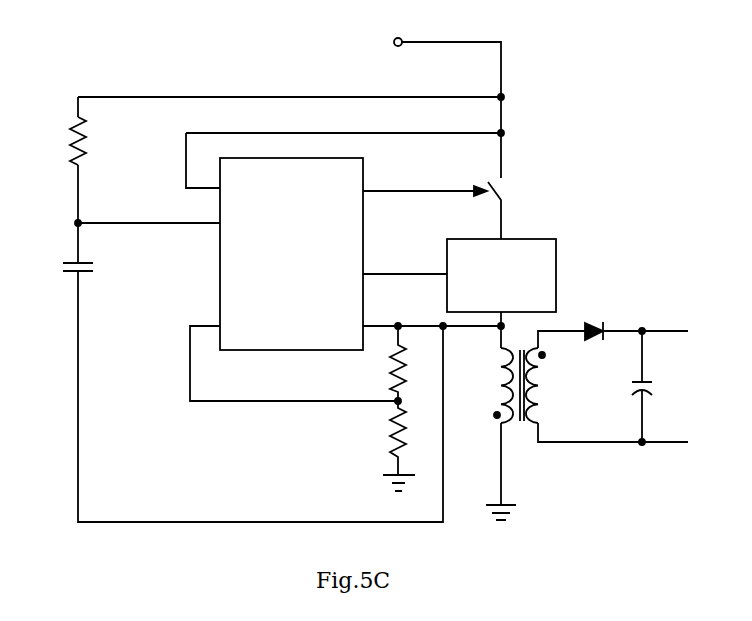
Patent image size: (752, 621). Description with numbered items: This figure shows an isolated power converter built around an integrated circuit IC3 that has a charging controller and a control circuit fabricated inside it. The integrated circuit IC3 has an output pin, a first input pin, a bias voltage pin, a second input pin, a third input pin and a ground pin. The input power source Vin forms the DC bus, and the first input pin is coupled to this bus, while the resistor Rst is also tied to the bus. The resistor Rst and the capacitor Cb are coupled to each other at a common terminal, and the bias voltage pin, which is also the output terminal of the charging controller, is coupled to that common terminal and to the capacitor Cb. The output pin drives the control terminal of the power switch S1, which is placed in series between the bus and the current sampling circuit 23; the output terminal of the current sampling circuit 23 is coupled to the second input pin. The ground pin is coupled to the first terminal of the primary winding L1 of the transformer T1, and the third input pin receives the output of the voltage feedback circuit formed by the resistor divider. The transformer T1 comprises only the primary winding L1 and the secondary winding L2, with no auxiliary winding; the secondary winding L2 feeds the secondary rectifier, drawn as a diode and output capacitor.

The current sampling circuit 23 is at (491, 287).
The integrated circuit IC3 is at (291, 254).
The power switch S1 is at (509, 210).
The transformer T1 is at (522, 400).
The primary winding L1 is at (495, 385).
The secondary winding L2 is at (546, 385).
The resistor Rst is at (62, 141).
The capacitor Cb is at (66, 267).
The input voltage terminal Vin is at (426, 104).